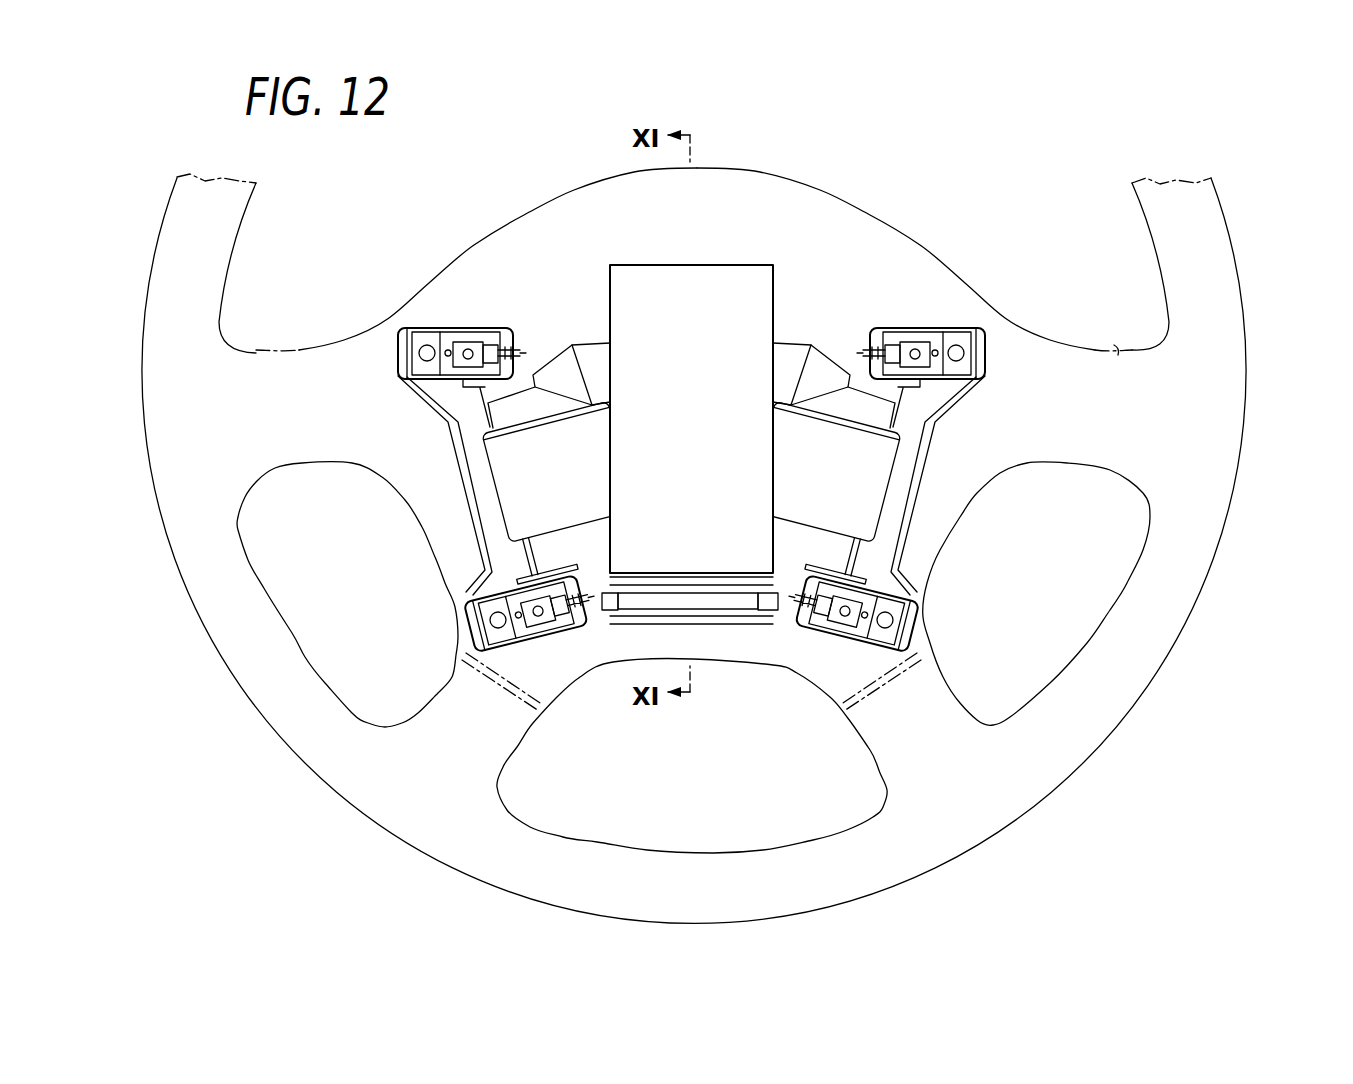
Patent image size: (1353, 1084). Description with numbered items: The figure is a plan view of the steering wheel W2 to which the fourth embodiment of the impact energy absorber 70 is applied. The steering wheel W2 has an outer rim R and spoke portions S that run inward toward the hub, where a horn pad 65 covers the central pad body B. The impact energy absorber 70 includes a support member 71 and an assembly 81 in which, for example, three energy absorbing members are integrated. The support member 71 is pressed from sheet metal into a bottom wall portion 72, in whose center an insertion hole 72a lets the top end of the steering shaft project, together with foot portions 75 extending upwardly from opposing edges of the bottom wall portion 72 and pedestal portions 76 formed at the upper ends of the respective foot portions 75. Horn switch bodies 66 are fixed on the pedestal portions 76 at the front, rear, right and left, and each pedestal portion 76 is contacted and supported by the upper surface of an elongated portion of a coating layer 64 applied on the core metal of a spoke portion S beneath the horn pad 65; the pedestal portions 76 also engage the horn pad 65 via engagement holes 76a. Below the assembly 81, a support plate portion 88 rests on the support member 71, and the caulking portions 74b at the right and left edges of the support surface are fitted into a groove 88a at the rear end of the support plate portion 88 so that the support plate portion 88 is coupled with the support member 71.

The coating layer 64 is at (1120, 352).
The horn pad 65 is at (872, 215).
The horn switch body 66 is at (452, 340).
The impact energy absorber 70 is at (547, 284).
The support member 71 is at (558, 327).
The bottom wall portion 72 is at (782, 350).
The insertion hole 72a is at (832, 365).
The caulking portion 74b is at (610, 610).
The foot portion 75 is at (462, 430).
The pedestal portion 76 is at (407, 340).
The engagement hole 76a is at (425, 360).
The assembly 81 is at (600, 275).
The support plate portion 88 is at (735, 618).
The groove 88a is at (707, 585).
The pad body B is at (808, 170).
The rim R is at (1224, 262).
The spoke portion S is at (308, 472).
The steering wheel W2 is at (1220, 182).